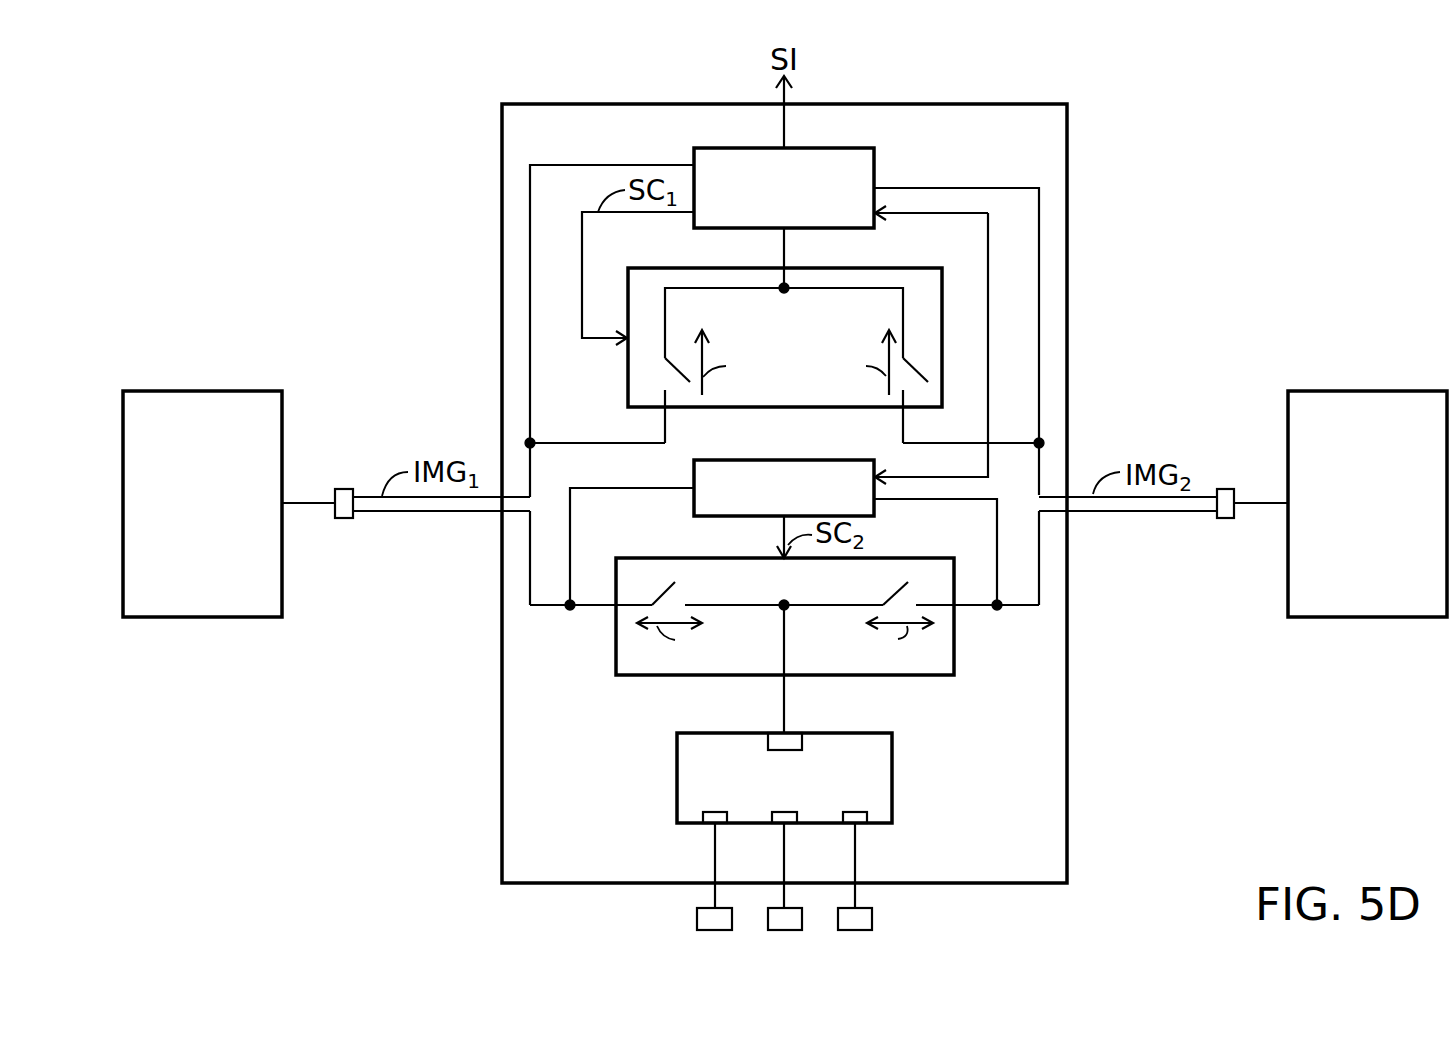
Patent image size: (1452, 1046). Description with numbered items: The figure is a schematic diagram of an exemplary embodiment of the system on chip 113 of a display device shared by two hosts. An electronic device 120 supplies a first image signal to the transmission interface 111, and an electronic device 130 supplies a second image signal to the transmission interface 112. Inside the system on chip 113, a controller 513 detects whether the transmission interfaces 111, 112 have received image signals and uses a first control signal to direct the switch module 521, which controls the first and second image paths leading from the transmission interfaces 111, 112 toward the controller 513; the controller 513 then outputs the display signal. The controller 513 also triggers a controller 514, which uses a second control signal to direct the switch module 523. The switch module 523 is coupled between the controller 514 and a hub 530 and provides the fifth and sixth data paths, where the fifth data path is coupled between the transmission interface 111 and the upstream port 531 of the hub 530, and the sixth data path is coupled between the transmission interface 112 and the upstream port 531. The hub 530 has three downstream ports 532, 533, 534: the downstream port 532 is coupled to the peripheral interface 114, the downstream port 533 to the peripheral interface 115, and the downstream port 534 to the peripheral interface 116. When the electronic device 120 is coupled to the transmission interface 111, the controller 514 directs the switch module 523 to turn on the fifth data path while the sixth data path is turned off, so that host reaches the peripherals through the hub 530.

The system on chip 113 is at (1045, 103).
The controller 513 is at (855, 147).
The controller 514 is at (808, 458).
The switch module 521 is at (908, 268).
The switch module 523 is at (920, 558).
The hub 530 is at (892, 778).
The upstream port 531 is at (803, 741).
The downstream port 532 is at (727, 819).
The downstream port 533 is at (797, 819).
The downstream port 534 is at (867, 819).
The transmission interface 111 is at (345, 518).
The transmission interface 112 is at (1225, 518).
The peripheral interface 114 is at (717, 933).
The peripheral interface 115 is at (772, 933).
The peripheral interface 116 is at (852, 933).
The electronic device 120 is at (200, 391).
The electronic device 130 is at (1365, 391).